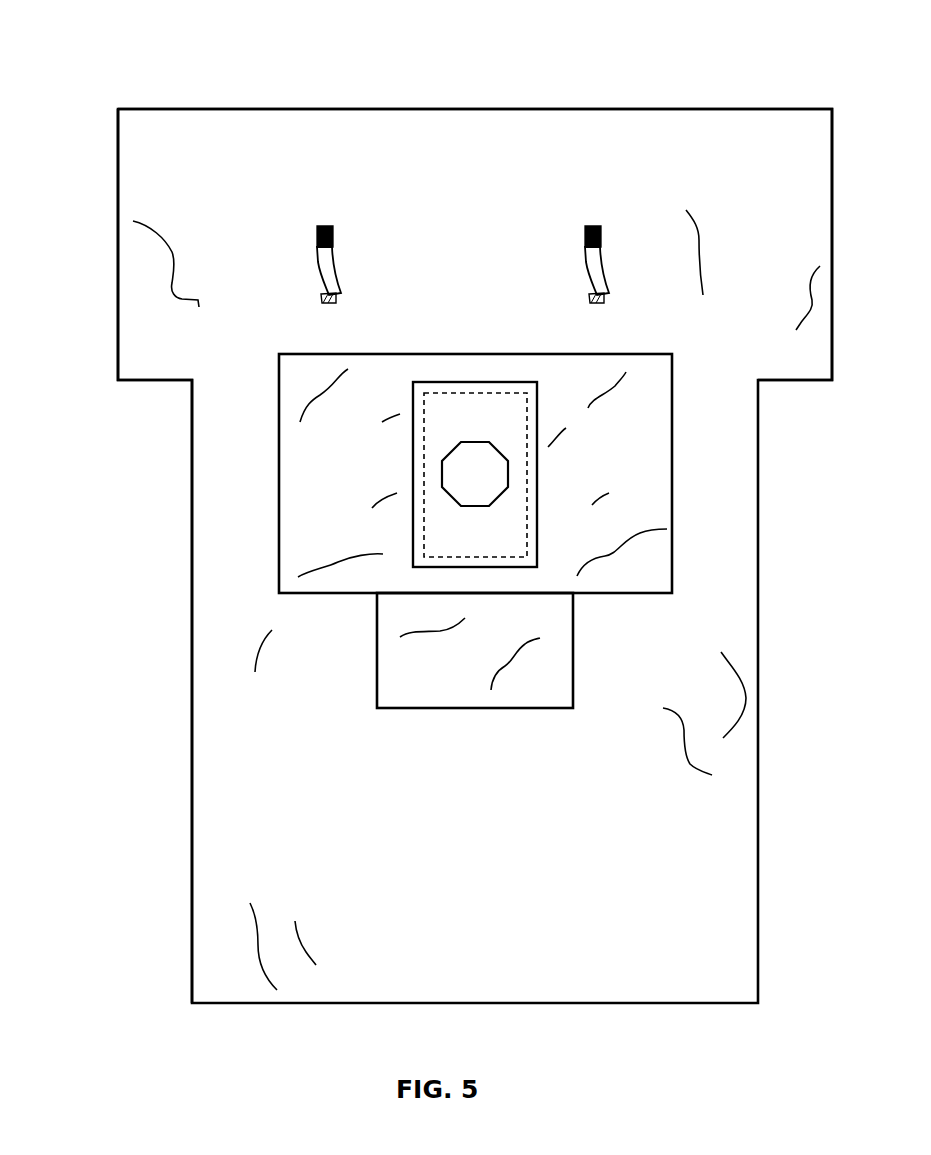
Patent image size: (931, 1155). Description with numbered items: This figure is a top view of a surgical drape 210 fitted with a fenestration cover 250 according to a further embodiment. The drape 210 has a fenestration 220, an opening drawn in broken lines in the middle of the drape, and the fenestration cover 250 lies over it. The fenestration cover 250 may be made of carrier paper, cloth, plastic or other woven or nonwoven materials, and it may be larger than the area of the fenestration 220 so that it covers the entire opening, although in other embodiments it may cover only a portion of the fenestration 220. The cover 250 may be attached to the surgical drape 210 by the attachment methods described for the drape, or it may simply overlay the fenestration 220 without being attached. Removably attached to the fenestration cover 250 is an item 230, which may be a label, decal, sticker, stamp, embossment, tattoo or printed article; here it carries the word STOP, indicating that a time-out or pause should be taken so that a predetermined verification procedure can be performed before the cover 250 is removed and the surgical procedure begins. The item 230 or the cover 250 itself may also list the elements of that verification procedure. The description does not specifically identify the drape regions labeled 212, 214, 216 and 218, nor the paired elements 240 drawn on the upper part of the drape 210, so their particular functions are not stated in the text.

The surgical drape 210 is at (133, 44).
The upper portion 212 is at (645, 140).
The side edge 214 is at (135, 167).
The central panel 216 is at (294, 538).
The lower extension panel 218 is at (573, 684).
The fenestration 220 is at (500, 394).
The item 230 is at (508, 477).
The handle / lever 240 is at (327, 268).
The fenestration cover 250 is at (413, 473).